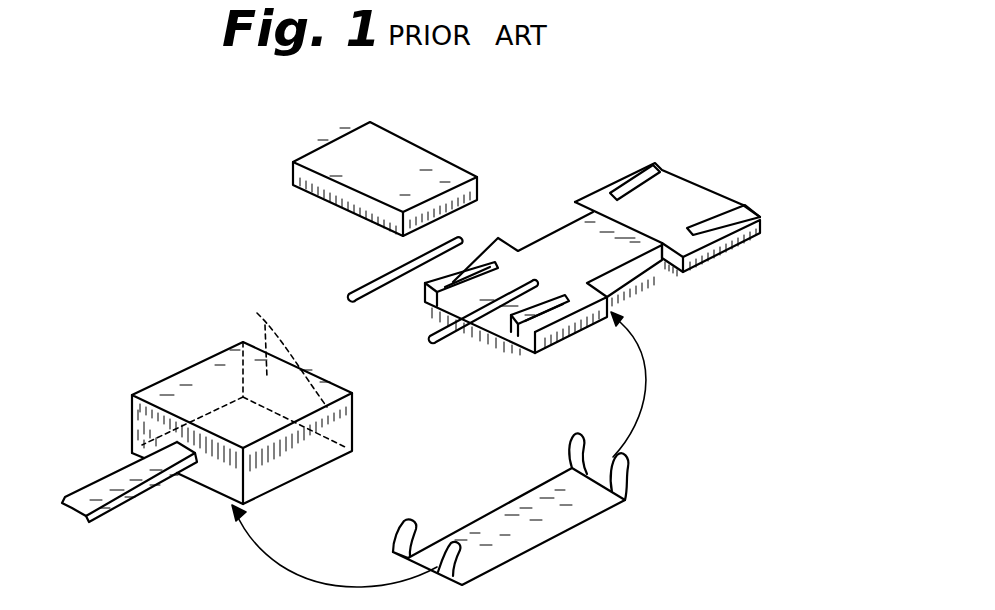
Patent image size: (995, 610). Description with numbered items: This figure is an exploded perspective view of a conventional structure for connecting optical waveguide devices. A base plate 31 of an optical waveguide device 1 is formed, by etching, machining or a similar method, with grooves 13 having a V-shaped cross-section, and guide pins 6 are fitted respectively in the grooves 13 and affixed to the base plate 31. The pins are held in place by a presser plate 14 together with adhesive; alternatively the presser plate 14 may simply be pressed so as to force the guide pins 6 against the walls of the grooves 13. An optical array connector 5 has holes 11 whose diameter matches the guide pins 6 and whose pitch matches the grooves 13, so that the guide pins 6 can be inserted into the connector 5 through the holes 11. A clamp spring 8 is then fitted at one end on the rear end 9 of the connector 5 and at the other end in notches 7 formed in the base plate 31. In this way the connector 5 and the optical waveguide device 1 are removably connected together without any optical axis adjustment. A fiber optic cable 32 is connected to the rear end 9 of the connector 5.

The optical waveguide device 1 is at (744, 249).
The optical array connector 5 is at (197, 397).
The guide pins 6 is at (420, 338).
The notches 7 is at (611, 300).
The clamp spring 8 is at (544, 540).
The rear end 9 is at (148, 423).
The holes 11 is at (257, 313).
The grooves 13 is at (548, 300).
The presser plate 14 is at (400, 158).
The base plate 31 is at (697, 200).
The fiber optic cable 32 is at (138, 496).